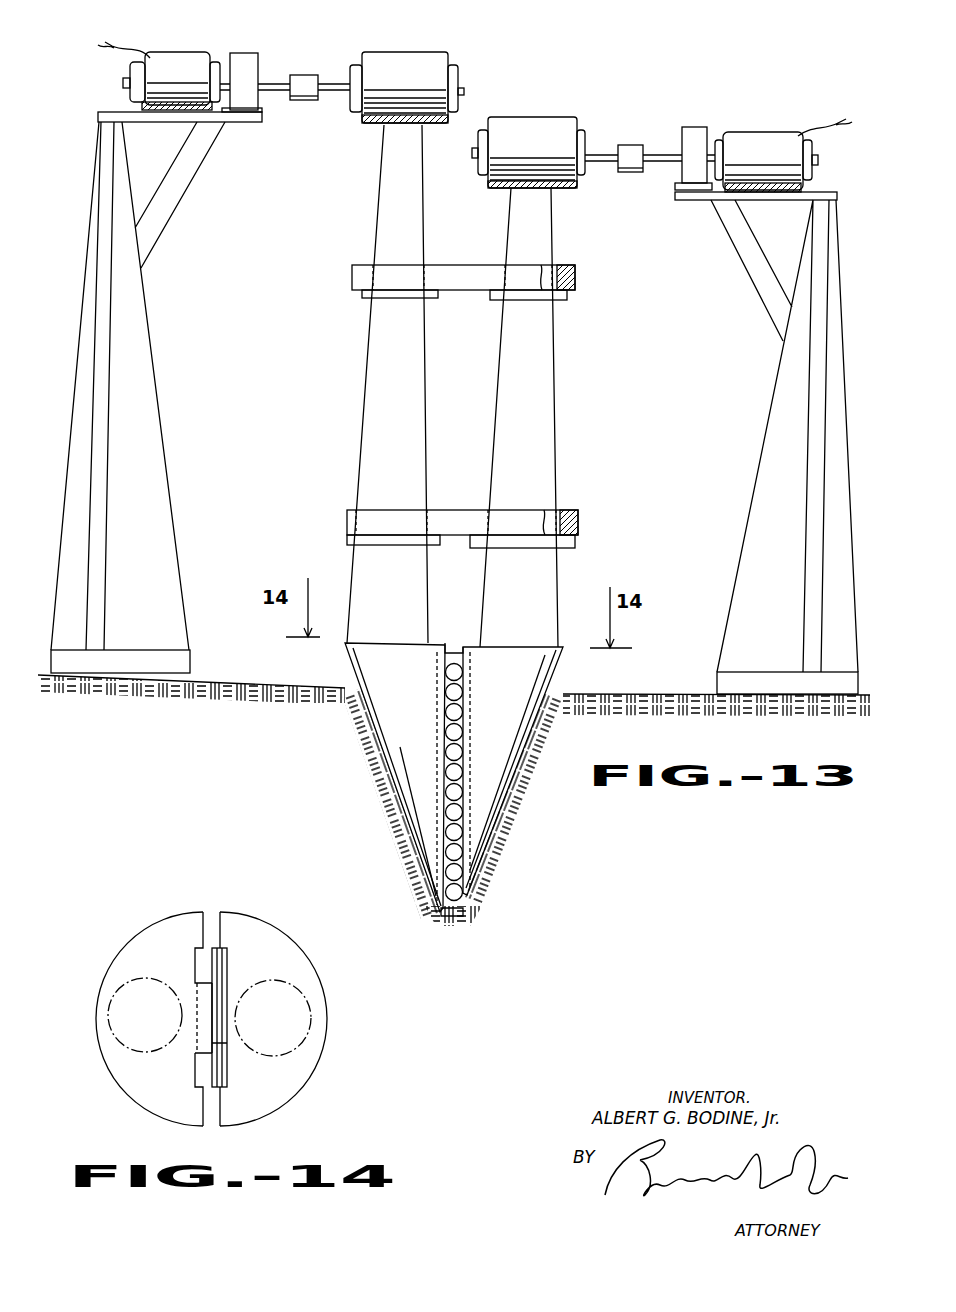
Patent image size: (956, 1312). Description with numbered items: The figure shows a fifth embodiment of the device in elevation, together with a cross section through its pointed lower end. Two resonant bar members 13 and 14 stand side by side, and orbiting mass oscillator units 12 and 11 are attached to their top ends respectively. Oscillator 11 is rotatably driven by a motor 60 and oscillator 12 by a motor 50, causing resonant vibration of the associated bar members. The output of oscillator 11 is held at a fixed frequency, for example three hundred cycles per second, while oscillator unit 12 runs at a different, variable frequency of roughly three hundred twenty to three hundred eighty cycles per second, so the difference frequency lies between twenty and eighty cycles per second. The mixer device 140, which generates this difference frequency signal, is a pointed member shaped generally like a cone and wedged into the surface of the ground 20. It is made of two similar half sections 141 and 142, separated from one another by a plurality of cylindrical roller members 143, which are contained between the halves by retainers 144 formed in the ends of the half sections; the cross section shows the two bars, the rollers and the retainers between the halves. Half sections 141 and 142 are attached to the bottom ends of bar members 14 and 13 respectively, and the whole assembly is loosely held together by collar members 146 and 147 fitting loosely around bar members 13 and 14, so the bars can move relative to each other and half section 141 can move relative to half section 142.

In FIG. 13, the orbiting mass oscillator unit 11 is at (400, 65).
In FIG. 13, the orbiting mass oscillator unit 12 is at (512, 132).
In FIG. 13, the resonant bar member 13 is at (537, 385).
In FIG. 14, the resonant bar member 13 is at (296, 1000).
In FIG. 13, the resonant bar member 14 is at (376, 401).
In FIG. 14, the resonant bar member 14 is at (112, 990).
In FIG. 13, the ground 20 is at (506, 846).
In FIG. 13, the motor 50 is at (760, 146).
In FIG. 13, the motor 60 is at (177, 62).
In FIG. 13, the mixer device 140 is at (465, 779).
In FIG. 13, the half section 141 is at (400, 745).
In FIG. 14, the half section 141 is at (130, 1082).
In FIG. 13, the half section 142 is at (493, 765).
In FIG. 14, the half section 142 is at (290, 950).
In FIG. 13, the cylindrical roller member 143 is at (460, 762).
In FIG. 14, the cylindrical roller member 143 is at (206, 1070).
In FIG. 13, the retainer 144 is at (468, 622).
In FIG. 14, the retainer 144 is at (225, 1045).
In FIG. 13, the collar member 146 is at (480, 482).
In FIG. 13, the collar member 147 is at (490, 240).